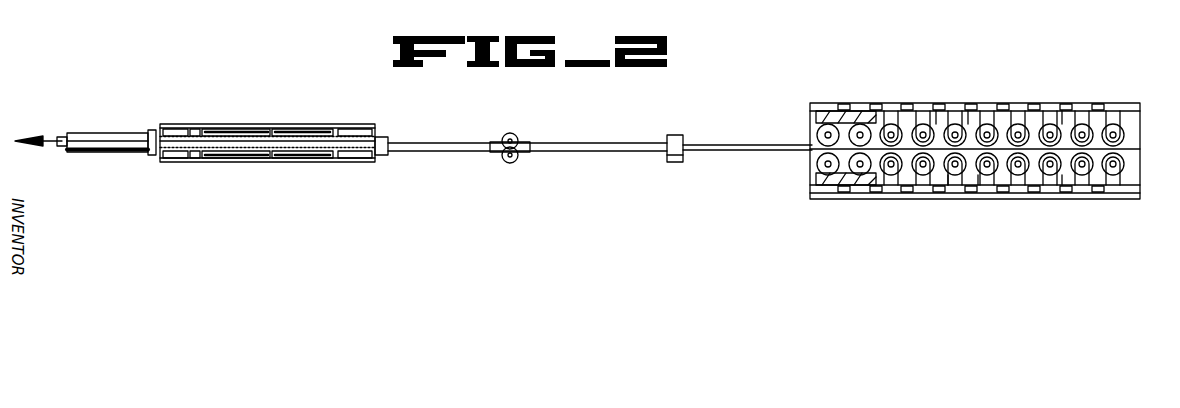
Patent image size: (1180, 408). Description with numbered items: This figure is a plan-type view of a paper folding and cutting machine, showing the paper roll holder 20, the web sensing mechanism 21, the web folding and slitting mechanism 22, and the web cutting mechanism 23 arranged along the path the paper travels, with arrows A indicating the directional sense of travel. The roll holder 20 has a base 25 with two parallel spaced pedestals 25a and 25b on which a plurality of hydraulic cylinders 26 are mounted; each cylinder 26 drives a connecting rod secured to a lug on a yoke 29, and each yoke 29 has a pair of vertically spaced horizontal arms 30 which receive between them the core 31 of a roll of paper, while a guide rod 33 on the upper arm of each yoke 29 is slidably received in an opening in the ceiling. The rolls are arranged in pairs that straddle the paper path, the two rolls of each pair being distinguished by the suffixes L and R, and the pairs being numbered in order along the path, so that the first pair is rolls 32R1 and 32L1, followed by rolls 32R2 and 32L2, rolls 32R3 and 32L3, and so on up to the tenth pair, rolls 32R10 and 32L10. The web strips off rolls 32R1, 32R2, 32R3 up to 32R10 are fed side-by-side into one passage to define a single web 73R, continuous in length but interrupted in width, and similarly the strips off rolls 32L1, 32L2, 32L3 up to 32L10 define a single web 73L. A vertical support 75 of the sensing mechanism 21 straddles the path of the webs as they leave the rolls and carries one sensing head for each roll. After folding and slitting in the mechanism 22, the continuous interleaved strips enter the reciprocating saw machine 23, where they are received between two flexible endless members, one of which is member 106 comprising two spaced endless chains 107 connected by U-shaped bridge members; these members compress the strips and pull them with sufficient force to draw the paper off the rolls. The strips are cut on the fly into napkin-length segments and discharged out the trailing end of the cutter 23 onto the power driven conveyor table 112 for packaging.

The arrows A is at (47, 138).
The paper roll holder 20 is at (802, 184).
The web sensing mechanism 21 is at (670, 131).
The web folding and slitting mechanism 22 is at (515, 131).
The web cutting mechanism 23 is at (172, 120).
The base 25 is at (806, 104).
The pedestal 25a is at (1007, 110).
The pedestal 25b is at (1028, 194).
The hydraulic cylinder 26 is at (1062, 109).
The yoke 29 is at (846, 191).
The horizontal arms 30 is at (966, 112).
The core 31 is at (842, 110).
The roll of paper 32R1 is at (824, 134).
The roll of paper 32R2 is at (862, 132).
The roll of paper 32R3 is at (893, 132).
The roll of paper 32R10 is at (1117, 134).
The roll of paper 32L1 is at (824, 164).
The roll of paper 32L2 is at (862, 176).
The roll of paper 32L3 is at (894, 176).
The roll of paper 32L10 is at (1117, 166).
The guide rod 33 is at (938, 112).
The web 73R is at (713, 140).
The web 73L is at (720, 156).
The vertical support 75 is at (666, 156).
The flexible endless member 106 is at (318, 156).
The endless chains 107 is at (312, 140).
The power driven conveyor table 112 is at (113, 148).